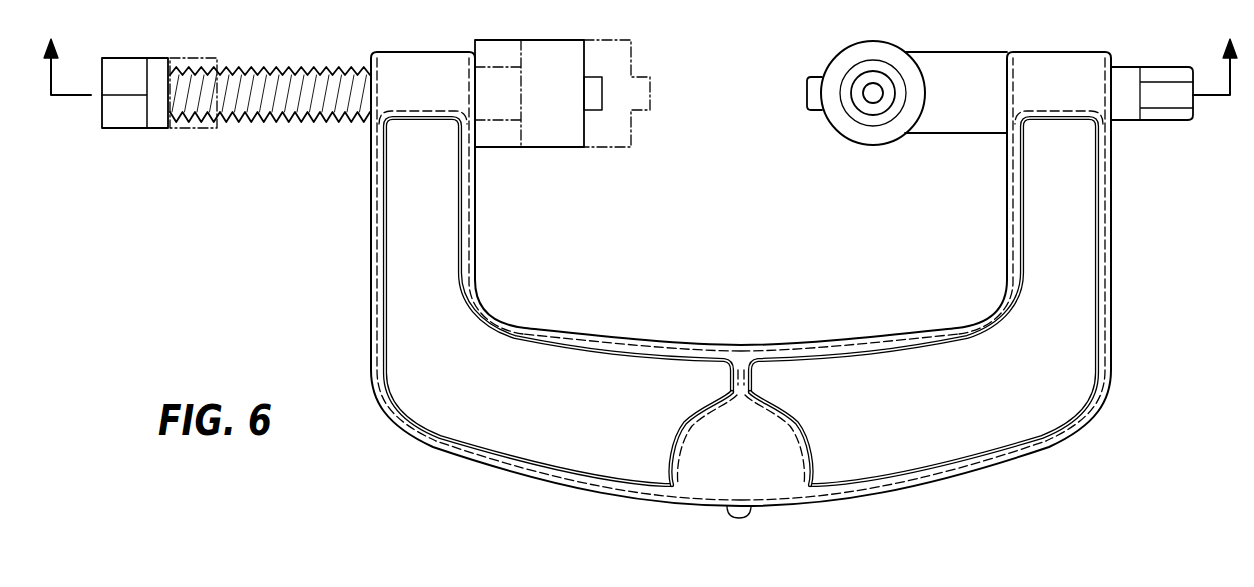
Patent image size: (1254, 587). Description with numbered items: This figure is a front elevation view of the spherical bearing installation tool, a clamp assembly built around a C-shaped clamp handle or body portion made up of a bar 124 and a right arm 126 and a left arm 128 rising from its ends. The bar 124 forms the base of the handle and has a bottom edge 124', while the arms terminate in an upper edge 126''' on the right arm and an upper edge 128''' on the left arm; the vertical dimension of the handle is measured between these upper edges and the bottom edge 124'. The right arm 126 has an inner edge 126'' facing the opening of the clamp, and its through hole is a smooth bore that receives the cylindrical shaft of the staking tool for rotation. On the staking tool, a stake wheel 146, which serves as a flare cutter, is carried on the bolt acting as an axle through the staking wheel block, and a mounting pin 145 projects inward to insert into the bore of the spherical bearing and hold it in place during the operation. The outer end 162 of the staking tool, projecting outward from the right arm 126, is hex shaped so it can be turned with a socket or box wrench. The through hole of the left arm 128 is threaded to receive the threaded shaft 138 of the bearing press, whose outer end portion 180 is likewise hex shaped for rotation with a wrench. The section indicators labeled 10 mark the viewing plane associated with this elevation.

The section line / view direction 10 is at (642, 53).
The outer end portion of the threaded shaft 180 is at (128, 58).
The threaded shaft 138 is at (308, 68).
The upper edge of the left arm 128''' is at (492, 227).
The left arm 128 is at (527, 298).
The stake wheel 146 is at (888, 42).
The mounting pin 145 is at (805, 100).
The upper edge of the right arm 126''' is at (1047, 229).
The outer end of the staking tool 162 is at (1160, 68).
The inner edge of the right arm 126'' is at (956, 123).
The right arm 126 is at (955, 298).
The bar 124 is at (741, 265).
The bottom edge of the clamp handle 124' is at (768, 418).